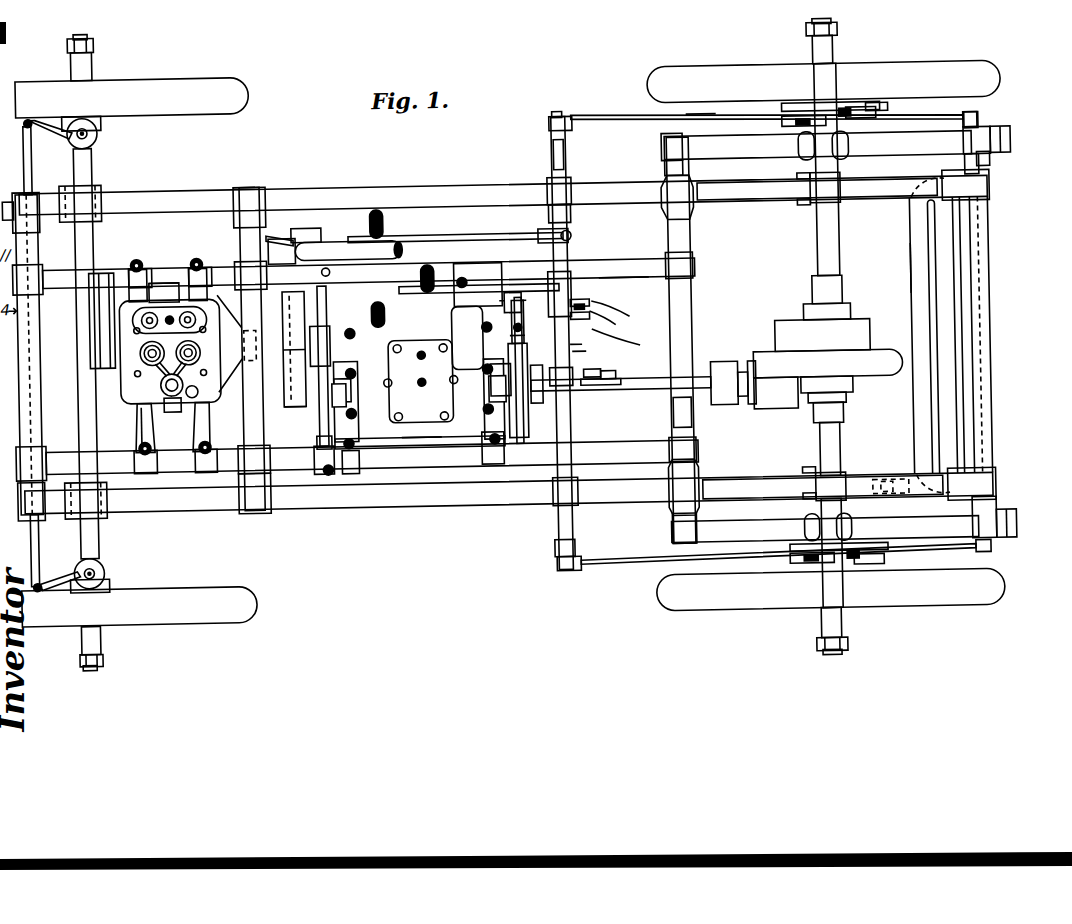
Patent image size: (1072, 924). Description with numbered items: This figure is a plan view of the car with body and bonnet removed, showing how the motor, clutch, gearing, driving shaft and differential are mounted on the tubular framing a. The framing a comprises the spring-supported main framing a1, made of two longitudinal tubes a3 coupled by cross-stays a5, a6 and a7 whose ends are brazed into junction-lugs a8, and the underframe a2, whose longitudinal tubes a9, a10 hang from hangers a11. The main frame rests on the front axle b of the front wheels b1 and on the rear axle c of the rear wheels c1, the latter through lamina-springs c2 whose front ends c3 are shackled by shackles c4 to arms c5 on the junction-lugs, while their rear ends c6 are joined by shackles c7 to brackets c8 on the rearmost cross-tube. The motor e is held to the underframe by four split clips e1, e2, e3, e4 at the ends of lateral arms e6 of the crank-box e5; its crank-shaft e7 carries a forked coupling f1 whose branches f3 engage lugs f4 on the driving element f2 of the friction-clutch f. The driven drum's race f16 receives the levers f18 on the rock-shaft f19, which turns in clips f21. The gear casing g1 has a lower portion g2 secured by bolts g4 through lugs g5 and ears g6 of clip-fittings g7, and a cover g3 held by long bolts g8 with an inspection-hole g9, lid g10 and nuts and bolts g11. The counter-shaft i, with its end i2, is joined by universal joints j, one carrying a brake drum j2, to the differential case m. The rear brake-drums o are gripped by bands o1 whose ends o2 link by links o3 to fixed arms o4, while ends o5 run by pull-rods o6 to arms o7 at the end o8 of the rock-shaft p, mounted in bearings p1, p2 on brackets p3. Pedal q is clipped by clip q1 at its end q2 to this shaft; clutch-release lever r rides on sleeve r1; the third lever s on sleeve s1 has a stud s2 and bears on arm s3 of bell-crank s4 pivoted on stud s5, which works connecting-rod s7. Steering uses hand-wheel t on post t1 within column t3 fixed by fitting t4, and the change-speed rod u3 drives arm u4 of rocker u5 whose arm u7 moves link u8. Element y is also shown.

The tubular framing a is at (444, 172).
The main framing a1 is at (774, 178).
The underframe a2 is at (623, 254).
The longitudinal parallel tubes a3 is at (341, 184).
The tubular cross-stay a5 is at (268, 431).
The tubular cross-stay a6 is at (664, 415).
The tubular cross-stay a7 is at (996, 418).
The junction-lugs a8 is at (243, 182).
The longitudinal tube of underframing a9 is at (626, 280).
The longitudinal tube of underframing a10 is at (643, 461).
The hangers a11 is at (238, 272).
The front axle b is at (73, 378).
The front road-wheels b1 is at (245, 91).
The rear axle c is at (811, 250).
The rear road-wheels c1 is at (1005, 88).
The lamina-springs c2 is at (893, 150).
The front ends of springs c3 is at (708, 148).
The jointed shackles c4 is at (665, 140).
The pins or arms c5 is at (665, 163).
The rear ends of springs c6 is at (953, 152).
The shackles c7 is at (1014, 158).
The brackets c8 is at (984, 172).
The motor e is at (118, 397).
The split clip e1 is at (140, 252).
The split clip e2 is at (193, 250).
The split clip e3 is at (132, 444).
The split clip e4 is at (216, 437).
The crank-box e5 is at (127, 380).
The brackets or lateral arms e6 is at (150, 276).
The crank-shaft e7 is at (270, 318).
The friction-clutch f is at (296, 328).
The forked coupling f1 is at (283, 360).
The driving element of clutch f2 is at (282, 400).
The branches of fork f3 is at (309, 280).
The lugs f4 is at (328, 296).
The channel or race f16 is at (330, 345).
The swinging arms or levers f18 is at (356, 369).
The rock-shaft f19 is at (356, 412).
The split clips f21 is at (313, 460).
The gear casing g1 is at (475, 405).
The lower portion of gear-box g2 is at (382, 447).
The cover of gear-box g3 is at (411, 447).
The bolts g4 is at (493, 436).
The eyed lugs g5 is at (470, 447).
The eyed ears g6 is at (505, 458).
The clip-fittings g7 is at (492, 465).
The long bolts g8 is at (487, 332).
The inspection-hole g9 is at (428, 343).
The detachable lid g10 is at (421, 381).
The nuts and bolts g11 is at (490, 388).
The counter-shaft i is at (655, 382).
The end of counter-shaft i2 is at (716, 362).
The universal joints j is at (744, 356).
The brake drum j2 is at (530, 405).
The differential case m is at (785, 321).
The brake-drums o is at (880, 112).
The brake bands o1 is at (872, 110).
The end of brake band o2 is at (788, 120).
The jointed link o3 is at (940, 102).
The fixed arm o4 is at (985, 125).
The end of brake band o5 is at (852, 112).
The pull-rod o6 is at (690, 115).
The arm o7 is at (560, 116).
The end of rock-shaft o8 is at (567, 152).
The rock-shaft p is at (571, 345).
The bearing p1 is at (551, 185).
The bearing p2 is at (575, 512).
The brackets p3 is at (553, 202).
The pedal-lever q is at (455, 233).
The clip q1 is at (573, 236).
The end of pedal-lever q2 is at (520, 248).
The clutch-release lever r is at (500, 283).
The sleeve r1 is at (572, 294).
The pedal-lever s is at (438, 322).
The sleeve s1 is at (588, 302).
The ear or stud s2 is at (518, 306).
The arm of bell-cranked lever s3 is at (522, 306).
The bell-cranked lever s4 is at (523, 327).
The stud s5 is at (525, 334).
The connecting-rod s7 is at (586, 352).
The hand-wheel t is at (303, 226).
The steering-post t1 is at (538, 376).
The steering column t3 is at (395, 238).
The fitting t4 is at (312, 224).
The connecting-rod u3 is at (632, 320).
The arm of rocker u4 is at (616, 326).
The double-armed lever or rocker u5 is at (640, 347).
The depending arm u7 is at (586, 390).
The link u8 is at (612, 389).
The tube y is at (912, 298).